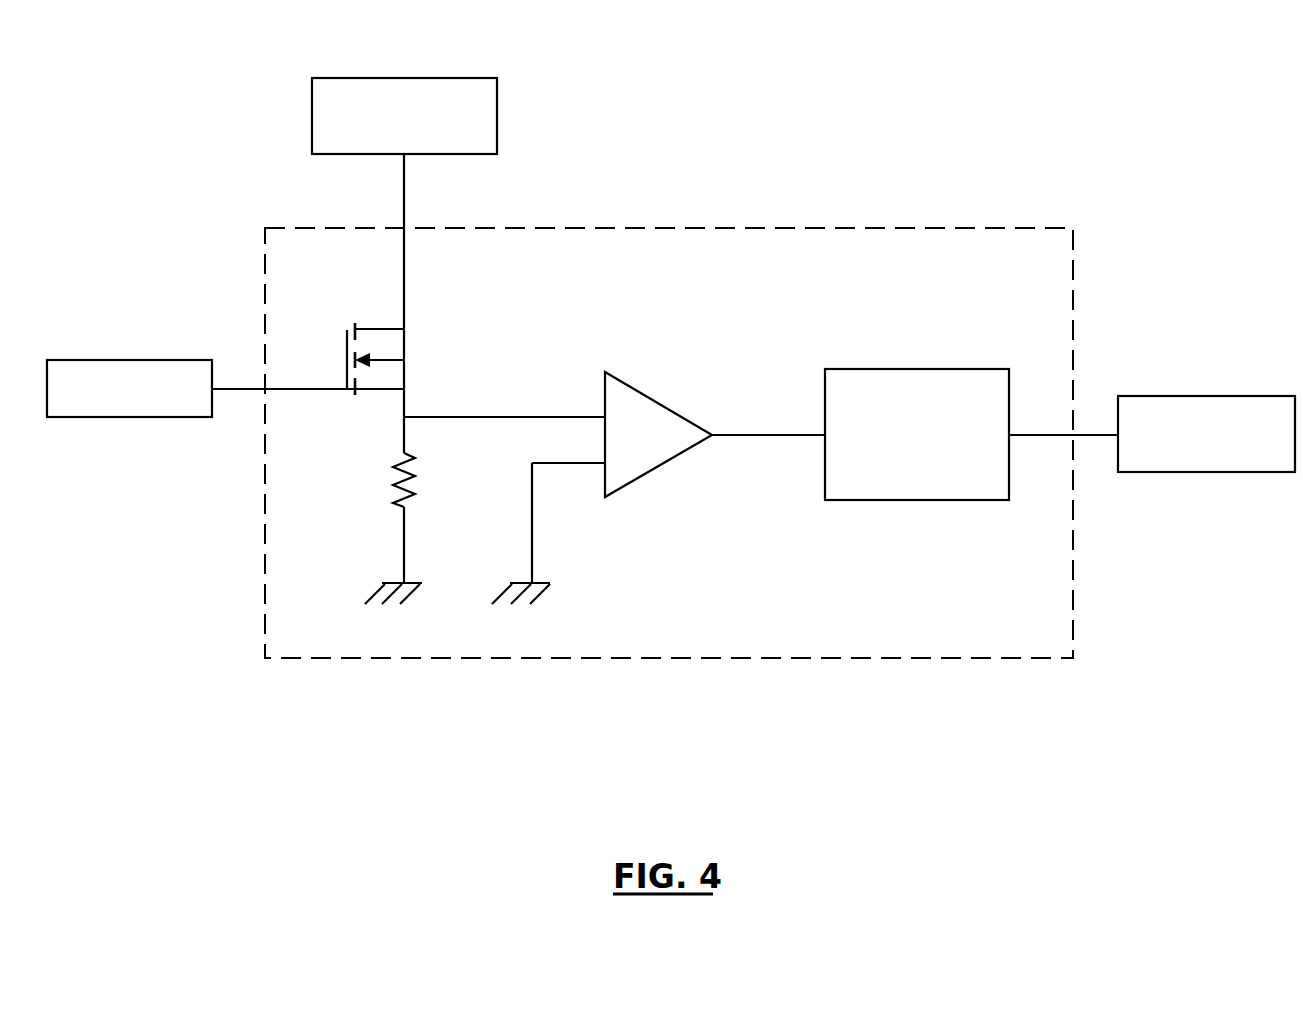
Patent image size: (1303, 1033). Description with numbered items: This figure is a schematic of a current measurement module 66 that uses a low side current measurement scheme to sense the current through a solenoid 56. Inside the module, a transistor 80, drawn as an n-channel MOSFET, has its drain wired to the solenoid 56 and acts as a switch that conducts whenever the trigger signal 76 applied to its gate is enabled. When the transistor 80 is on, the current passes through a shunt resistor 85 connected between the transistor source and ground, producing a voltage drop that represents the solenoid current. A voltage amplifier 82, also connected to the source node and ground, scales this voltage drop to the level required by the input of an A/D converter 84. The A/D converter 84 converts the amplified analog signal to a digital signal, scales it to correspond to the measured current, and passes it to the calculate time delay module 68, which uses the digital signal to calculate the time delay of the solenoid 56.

The solenoid 56 is at (404, 78).
The current measurement module 66 is at (798, 228).
The trigger signal 76 is at (157, 360).
The transistor 80 is at (438, 359).
The voltage amplifier 82 is at (659, 403).
The A/D converter 84 is at (888, 369).
The calculate time delay module 68 is at (1240, 396).
The shunt resistor 85 is at (368, 499).